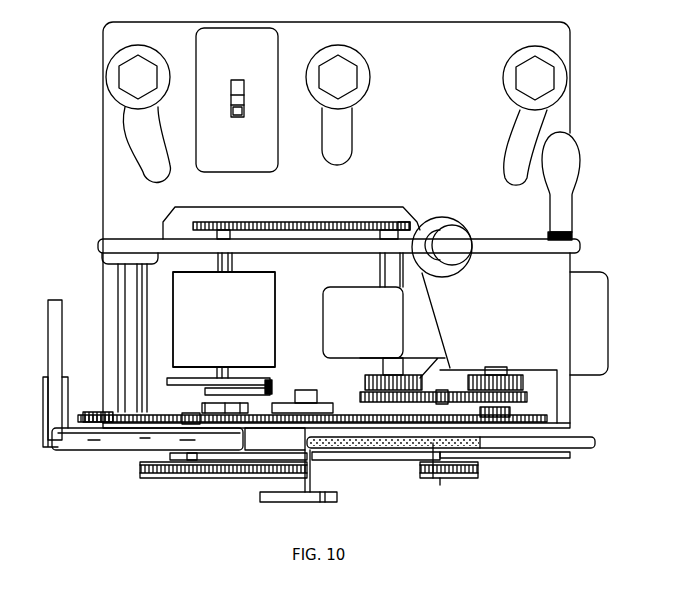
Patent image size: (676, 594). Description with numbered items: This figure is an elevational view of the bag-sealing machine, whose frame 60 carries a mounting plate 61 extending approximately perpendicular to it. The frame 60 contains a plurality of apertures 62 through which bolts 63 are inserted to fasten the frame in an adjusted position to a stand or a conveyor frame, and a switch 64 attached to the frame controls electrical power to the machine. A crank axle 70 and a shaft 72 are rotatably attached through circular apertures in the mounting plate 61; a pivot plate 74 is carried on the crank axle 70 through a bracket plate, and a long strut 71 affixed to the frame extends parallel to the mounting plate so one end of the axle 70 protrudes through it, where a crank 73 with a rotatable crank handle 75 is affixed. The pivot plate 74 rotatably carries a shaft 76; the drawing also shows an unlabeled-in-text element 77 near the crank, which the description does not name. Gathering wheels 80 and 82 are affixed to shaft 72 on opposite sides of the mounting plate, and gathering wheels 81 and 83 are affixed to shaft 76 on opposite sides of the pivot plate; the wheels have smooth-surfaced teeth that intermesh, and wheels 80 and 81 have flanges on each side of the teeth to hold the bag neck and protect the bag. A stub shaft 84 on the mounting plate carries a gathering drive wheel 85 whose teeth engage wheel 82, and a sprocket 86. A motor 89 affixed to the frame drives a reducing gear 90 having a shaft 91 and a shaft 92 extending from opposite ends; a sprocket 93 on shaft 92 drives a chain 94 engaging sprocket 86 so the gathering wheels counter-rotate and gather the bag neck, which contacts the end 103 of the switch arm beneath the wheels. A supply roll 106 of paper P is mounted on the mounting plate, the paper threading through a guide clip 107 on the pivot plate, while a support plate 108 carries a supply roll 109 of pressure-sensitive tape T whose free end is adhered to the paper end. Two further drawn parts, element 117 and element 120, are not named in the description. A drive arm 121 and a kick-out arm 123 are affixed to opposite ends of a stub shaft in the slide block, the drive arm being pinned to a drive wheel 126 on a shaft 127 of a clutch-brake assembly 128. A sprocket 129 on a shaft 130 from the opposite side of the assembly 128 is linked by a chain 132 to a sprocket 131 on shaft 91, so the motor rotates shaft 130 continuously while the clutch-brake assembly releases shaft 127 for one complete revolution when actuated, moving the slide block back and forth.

The frame 60 is at (468, 30).
The mounting plate 61 is at (563, 428).
The aperture 62 is at (145, 158).
The bolt 63 is at (143, 70).
The switch 64 is at (270, 155).
The crank axle 70 is at (122, 282).
The long strut 71 is at (110, 258).
The shaft 72 is at (433, 478).
The crank 73 is at (530, 246).
The pivot plate 74 is at (257, 442).
The crank handle 75 is at (565, 172).
The shaft 76 is at (183, 457).
The roller 77 is at (455, 233).
The gathering wheel 80 is at (478, 470).
The gathering wheel 81 is at (140, 468).
The gathering wheel 82 is at (420, 419).
The gathering wheel 83 is at (186, 416).
The stub shaft 84 is at (540, 410).
The gathering drive wheel 85 is at (545, 416).
The sprocket 86 is at (547, 360).
The motor 89 is at (595, 302).
The reducing gear 90 is at (345, 292).
The shaft 91 is at (388, 262).
The shaft 92 is at (376, 372).
The sprocket 93 is at (443, 358).
The chain 94 is at (450, 378).
The end of switch arm 103 is at (303, 430).
The supply roll 106 is at (47, 330).
The guide clip 107 is at (56, 448).
The support plate 108 is at (570, 456).
The supply roll 109 is at (598, 441).
The block 117 is at (318, 408).
The block 120 is at (300, 392).
The drive arm 121 is at (270, 390).
The kick-out arm 123 is at (337, 497).
The drive wheel 126 is at (303, 357).
The shaft 127 is at (213, 376).
The clutch-brake assembly 128 is at (268, 300).
The sprocket 129 is at (217, 234).
The shaft 130 is at (232, 262).
The sprocket 131 is at (412, 226).
The chain 132 is at (347, 220).
The paper P is at (100, 445).
The tape T is at (440, 485).